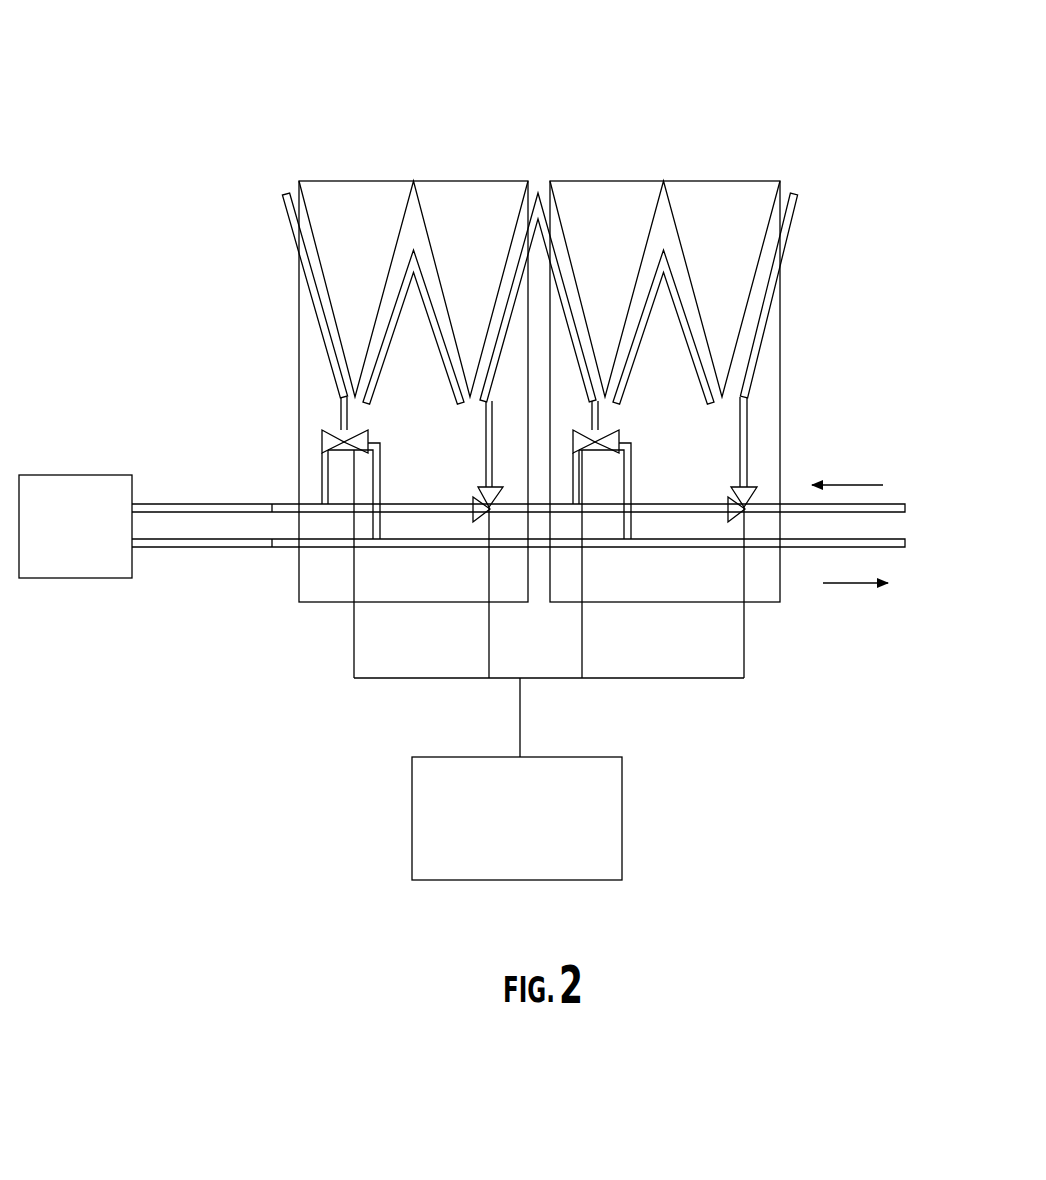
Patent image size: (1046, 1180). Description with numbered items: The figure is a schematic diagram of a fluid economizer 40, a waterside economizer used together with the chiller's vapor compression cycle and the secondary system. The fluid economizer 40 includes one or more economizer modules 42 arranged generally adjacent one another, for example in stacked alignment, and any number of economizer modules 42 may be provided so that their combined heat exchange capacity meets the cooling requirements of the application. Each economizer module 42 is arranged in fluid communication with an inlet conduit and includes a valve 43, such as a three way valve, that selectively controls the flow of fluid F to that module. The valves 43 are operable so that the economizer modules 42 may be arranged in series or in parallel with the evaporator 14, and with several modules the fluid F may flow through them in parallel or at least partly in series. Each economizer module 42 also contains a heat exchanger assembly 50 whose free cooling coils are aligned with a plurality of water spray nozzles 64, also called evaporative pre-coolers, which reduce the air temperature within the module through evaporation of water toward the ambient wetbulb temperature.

The evaporator 14 is at (90, 539).
The fluid economizer 40 is at (188, 148).
The economizer modules 42 is at (559, 148).
The valve 43 is at (472, 505).
The heat exchanger assembly 50 is at (335, 255).
The water spray nozzles 64 is at (312, 312).